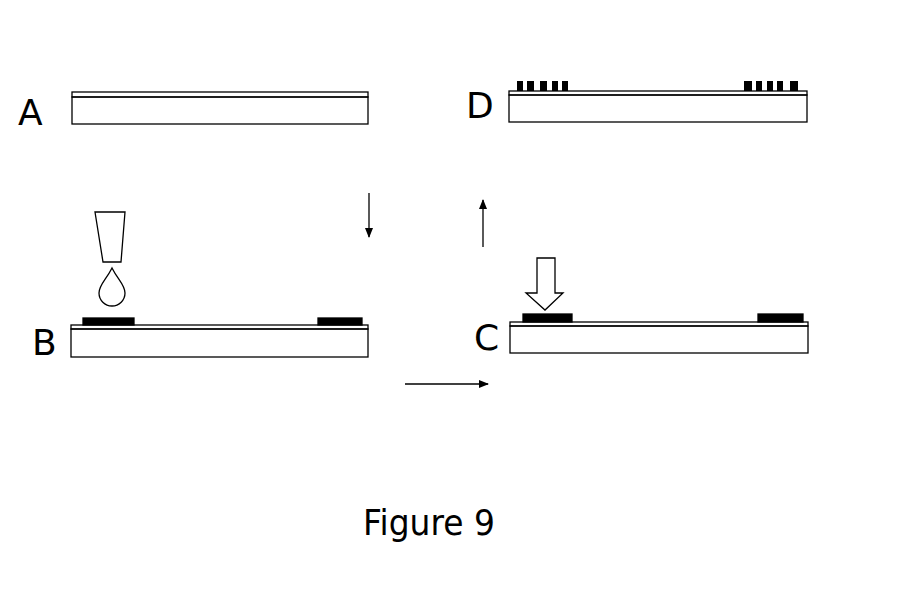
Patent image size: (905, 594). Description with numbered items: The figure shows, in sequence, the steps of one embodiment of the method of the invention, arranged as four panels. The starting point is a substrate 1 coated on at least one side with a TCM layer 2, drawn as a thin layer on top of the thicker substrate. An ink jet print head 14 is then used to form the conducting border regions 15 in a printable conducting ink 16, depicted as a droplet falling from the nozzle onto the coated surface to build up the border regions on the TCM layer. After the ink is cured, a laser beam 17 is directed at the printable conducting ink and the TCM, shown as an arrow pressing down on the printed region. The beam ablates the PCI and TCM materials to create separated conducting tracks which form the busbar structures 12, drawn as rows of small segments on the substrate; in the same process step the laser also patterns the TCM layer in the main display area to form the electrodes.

The substrate 1 is at (124, 118).
The TCM layer 2 is at (152, 91).
The busbar structures 12 is at (547, 79).
The ink jet print head 14 is at (97, 250).
The conducting border regions 15 is at (131, 316).
The printable conducting ink 16 is at (129, 282).
The laser beam 17 is at (561, 268).